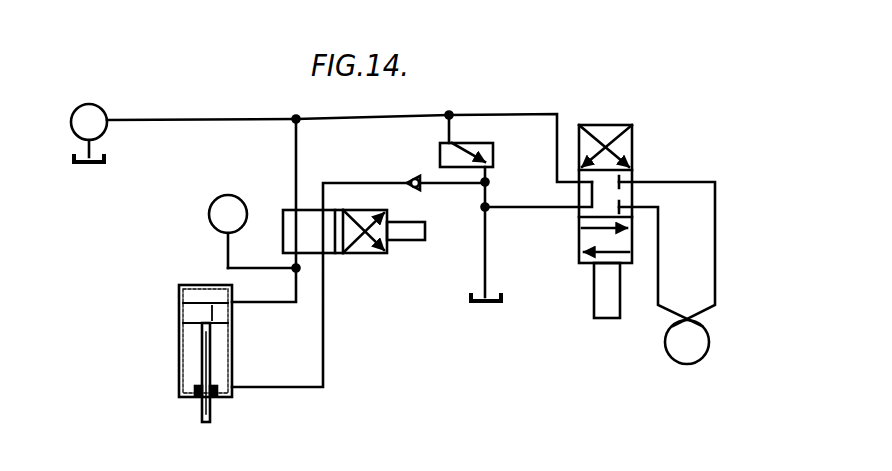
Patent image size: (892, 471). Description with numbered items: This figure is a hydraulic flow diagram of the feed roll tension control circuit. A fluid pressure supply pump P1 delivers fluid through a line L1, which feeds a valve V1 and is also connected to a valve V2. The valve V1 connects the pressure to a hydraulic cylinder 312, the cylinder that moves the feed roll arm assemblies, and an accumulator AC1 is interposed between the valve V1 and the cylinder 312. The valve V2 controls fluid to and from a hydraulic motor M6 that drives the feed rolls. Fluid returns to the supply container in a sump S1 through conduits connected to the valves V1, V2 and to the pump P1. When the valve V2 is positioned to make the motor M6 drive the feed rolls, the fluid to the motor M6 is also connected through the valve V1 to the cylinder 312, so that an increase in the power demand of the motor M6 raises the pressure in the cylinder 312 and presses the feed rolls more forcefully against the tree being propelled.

The fluid pressure supply pump P1 is at (100, 107).
The sump S1 is at (90, 166).
The line L1 is at (213, 118).
The accumulator AC1 is at (222, 196).
The valve V1 is at (353, 256).
The hydraulic cylinder 312 is at (232, 346).
The valve V2 is at (633, 148).
The hydraulic motor M6 is at (690, 364).